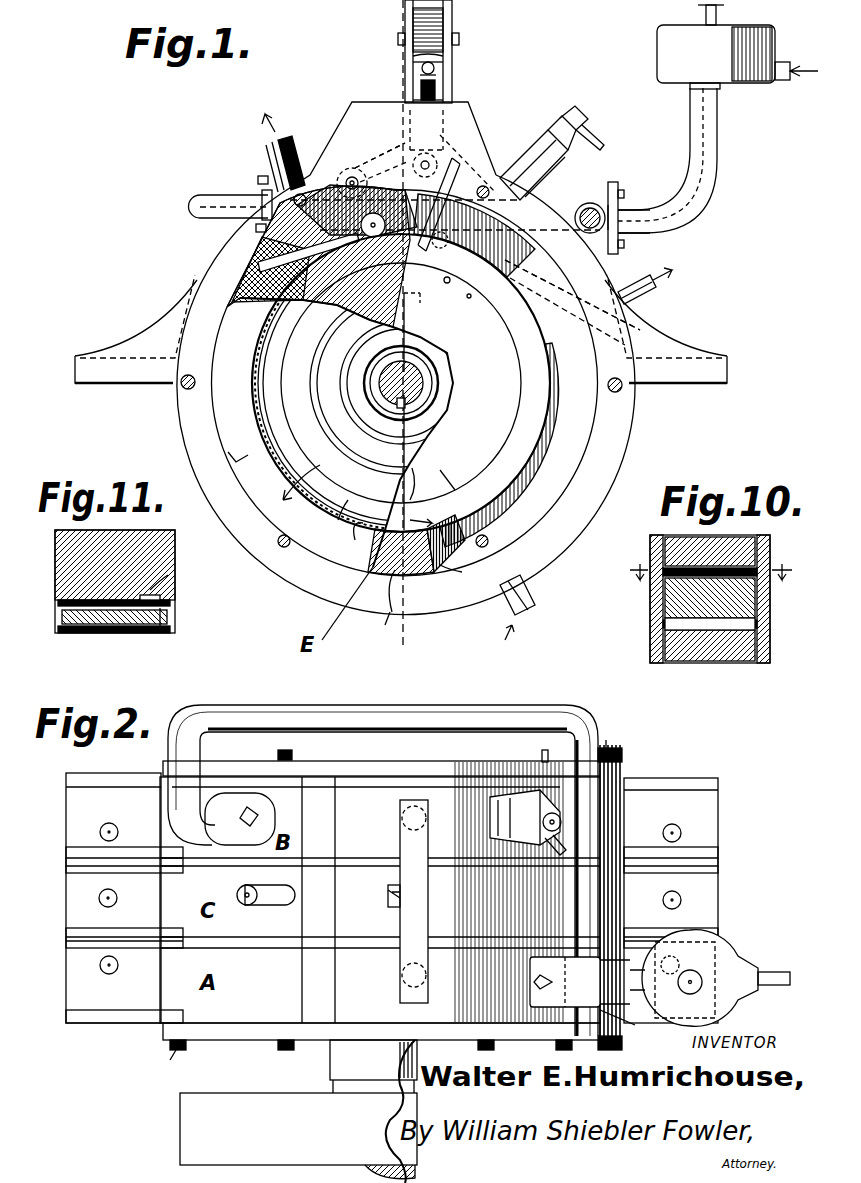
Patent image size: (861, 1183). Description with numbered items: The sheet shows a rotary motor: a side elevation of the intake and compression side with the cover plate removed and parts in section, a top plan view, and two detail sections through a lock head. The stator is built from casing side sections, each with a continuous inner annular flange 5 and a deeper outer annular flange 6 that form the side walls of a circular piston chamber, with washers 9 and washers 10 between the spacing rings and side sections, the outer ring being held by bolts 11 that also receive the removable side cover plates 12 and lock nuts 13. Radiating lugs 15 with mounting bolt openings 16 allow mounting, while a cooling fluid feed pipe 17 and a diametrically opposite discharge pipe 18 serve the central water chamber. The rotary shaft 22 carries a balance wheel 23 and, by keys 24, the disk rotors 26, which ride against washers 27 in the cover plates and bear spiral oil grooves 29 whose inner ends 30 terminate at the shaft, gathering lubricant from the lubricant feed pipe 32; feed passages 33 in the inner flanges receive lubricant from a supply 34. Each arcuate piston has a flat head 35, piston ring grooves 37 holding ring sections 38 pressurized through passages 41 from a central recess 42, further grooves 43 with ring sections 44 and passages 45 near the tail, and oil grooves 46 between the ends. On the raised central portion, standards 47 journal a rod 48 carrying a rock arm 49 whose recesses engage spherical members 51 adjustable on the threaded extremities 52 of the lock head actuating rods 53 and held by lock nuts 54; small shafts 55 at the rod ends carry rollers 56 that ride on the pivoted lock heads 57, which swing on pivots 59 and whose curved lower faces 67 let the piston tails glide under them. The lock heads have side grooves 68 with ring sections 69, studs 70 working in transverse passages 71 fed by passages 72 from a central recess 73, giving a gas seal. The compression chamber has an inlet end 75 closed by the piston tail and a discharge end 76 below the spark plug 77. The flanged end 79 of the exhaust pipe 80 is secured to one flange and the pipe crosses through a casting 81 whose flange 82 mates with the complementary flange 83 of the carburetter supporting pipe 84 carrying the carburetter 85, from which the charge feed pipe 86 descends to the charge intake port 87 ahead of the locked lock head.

In FIG. 1, the inner annular flange 5 is at (500, 343).
In FIG. 1, the outer annular flange 6 is at (440, 12).
In FIG. 1, the washers 9 is at (430, 578).
In FIG. 1, the washers 10 is at (424, 230).
In FIG. 2, the washers 10 is at (322, 862).
In FIG. 1, the bolts 11 is at (190, 389).
In FIG. 10, the bolts 11 is at (715, 571).
In FIG. 2, the bolts 11 is at (172, 1054).
In FIG. 2, the side cover plates 12 is at (162, 768).
In FIG. 2, the lock nuts 13 is at (278, 1046).
In FIG. 1, the radiating lugs 15 is at (108, 388).
In FIG. 2, the radiating lugs 15 is at (66, 850).
In FIG. 2, the mounting bolt accommodating openings 16 is at (108, 838).
In FIG. 1, the cooling fluid feed pipe 17 is at (534, 575).
In FIG. 1, the discharge pipe 18 is at (296, 150).
In FIG. 2, the discharge pipe 18 is at (248, 887).
In FIG. 1, the rotary shaft 22 is at (426, 388).
In FIG. 2, the balance wheel 23 is at (193, 1139).
In FIG. 1, the keys 24 is at (405, 406).
In FIG. 1, the disk rotors 26 is at (383, 383).
In FIG. 2, the washers 27 is at (258, 770).
In FIG. 1, the spiral oil grooves 29 is at (387, 433).
In FIG. 1, the inner ends of spiral grooves 30 is at (430, 352).
In FIG. 1, the lubricant feed pipe 32 is at (657, 292).
In FIG. 2, the lubricant feed pipe 32 is at (540, 762).
In FIG. 1, the feed passages 33 is at (460, 278).
In FIG. 1, the source of lubricant supply 34 is at (440, 352).
In FIG. 1, the flat head 35 is at (470, 535).
In FIG. 1, the piston ring grooves 37 is at (425, 473).
In FIG. 1, the piston ring sections 38 is at (412, 620).
In FIG. 1, the passages 41 is at (440, 500).
In FIG. 1, the central recess 42 is at (450, 571).
In FIG. 1, the piston ring accommodating grooves 43 is at (277, 269).
In FIG. 1, the piston ring sections 44 is at (275, 270).
In FIG. 1, the passages 45 is at (318, 256).
In FIG. 1, the oil grooves 46 is at (234, 444).
In FIG. 1, the standards 47 is at (406, 24).
In FIG. 2, the standards 47 is at (395, 888).
In FIG. 1, the rod 48 is at (455, 36).
In FIG. 2, the rod 48 is at (388, 896).
In FIG. 1, the rock arm 49 is at (460, 16).
In FIG. 2, the rock arm 49 is at (402, 850).
In FIG. 1, the spherical members 51 is at (448, 66).
In FIG. 2, the spherical members 51 is at (404, 810).
In FIG. 1, the threaded upper extremities 52 is at (452, 92).
In FIG. 1, the lock head actuating rods 53 is at (412, 100).
In FIG. 1, the lock nuts 54 is at (452, 77).
In FIG. 1, the small shafts 55 is at (380, 140).
In FIG. 1, the rollers 56 is at (452, 104).
In FIG. 1, the lock heads 57 is at (378, 212).
In FIG. 11, the lock heads 57 is at (120, 540).
In FIG. 10, the lock heads 57 is at (722, 664).
In FIG. 1, the pivots 59 is at (352, 176).
In FIG. 1, the lower faces of lock heads 67 is at (395, 272).
In FIG. 11, the grooves 68 is at (158, 590).
In FIG. 10, the grooves 68 is at (656, 663).
In FIG. 1, the piston ring sections 69 is at (443, 246).
In FIG. 11, the piston ring sections 69 is at (162, 602).
In FIG. 10, the piston ring sections 69 is at (768, 550).
In FIG. 11, the studs 70 is at (168, 575).
In FIG. 10, the studs 70 is at (665, 598).
In FIG. 11, the transverse passages 71 is at (160, 630).
In FIG. 10, the transverse passages 71 is at (762, 640).
In FIG. 11, the passages 72 is at (108, 625).
In FIG. 10, the passages 72 is at (700, 548).
In FIG. 11, the central recess 73 is at (85, 634).
In FIG. 1, the inlet end of charge compression chamber 75 is at (380, 237).
In FIG. 1, the discharge end of charge compression chamber 76 is at (474, 235).
In FIG. 1, the spark plug 77 is at (565, 125).
In FIG. 2, the spark plug 77 is at (510, 845).
In FIG. 1, the flanged end of exhaust pipe 79 is at (252, 198).
In FIG. 2, the flanged end of exhaust pipe 79 is at (266, 810).
In FIG. 1, the exhaust pipe 80 is at (205, 196).
In FIG. 2, the exhaust pipe 80 is at (244, 712).
In FIG. 1, the casting 81 is at (584, 206).
In FIG. 2, the casting 81 is at (532, 968).
In FIG. 1, the flange 82 is at (612, 185).
In FIG. 2, the flange 82 is at (629, 1028).
In FIG. 1, the complementary flange 83 is at (618, 190).
In FIG. 2, the complementary flange 83 is at (610, 945).
In FIG. 1, the carburetter supporting pipe 84 is at (717, 158).
In FIG. 1, the carburetter 85 is at (656, 48).
In FIG. 2, the carburetter 85 is at (737, 948).
In FIG. 1, the charge feed pipe 86 is at (660, 222).
In FIG. 1, the charge intake port 87 is at (572, 295).